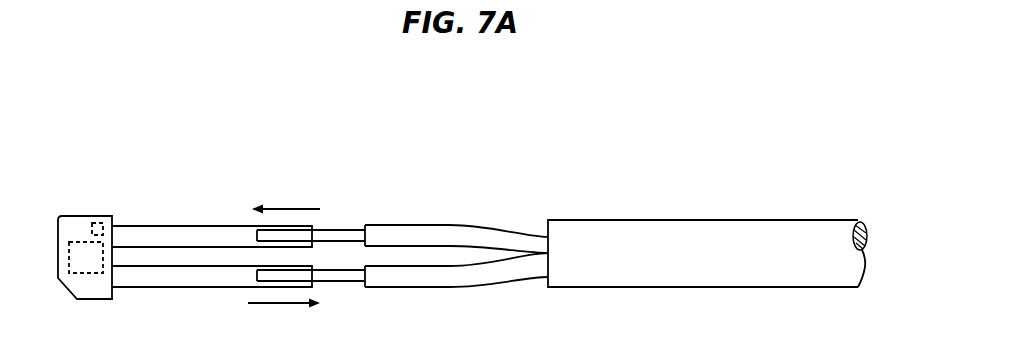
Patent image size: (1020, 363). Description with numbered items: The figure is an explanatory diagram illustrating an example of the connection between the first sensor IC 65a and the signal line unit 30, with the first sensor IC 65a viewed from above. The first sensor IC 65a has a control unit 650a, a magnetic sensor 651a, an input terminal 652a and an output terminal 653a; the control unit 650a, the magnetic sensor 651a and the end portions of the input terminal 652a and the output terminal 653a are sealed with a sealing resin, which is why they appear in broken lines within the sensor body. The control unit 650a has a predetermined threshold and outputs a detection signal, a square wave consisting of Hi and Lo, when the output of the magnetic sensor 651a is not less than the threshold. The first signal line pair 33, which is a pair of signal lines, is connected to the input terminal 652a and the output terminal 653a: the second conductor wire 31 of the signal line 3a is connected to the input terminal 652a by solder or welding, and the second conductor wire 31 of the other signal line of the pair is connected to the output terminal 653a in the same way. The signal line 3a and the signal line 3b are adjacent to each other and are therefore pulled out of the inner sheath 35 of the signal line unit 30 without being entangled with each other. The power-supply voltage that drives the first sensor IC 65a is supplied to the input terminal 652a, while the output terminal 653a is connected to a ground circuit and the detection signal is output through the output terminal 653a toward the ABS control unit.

The signal line unit 30 is at (832, 202).
The first sensor IC 65a is at (308, 165).
The control unit 650a is at (97, 227).
The magnetic sensor 651a is at (86, 257).
The input terminal 652a is at (168, 240).
The output terminal 653a is at (168, 277).
The second conductor wire 31 is at (357, 235).
The first signal line pair 33 is at (430, 177).
The signal line 3a is at (388, 233).
The signal line 3b is at (427, 275).
The inner sheath 35 is at (772, 237).